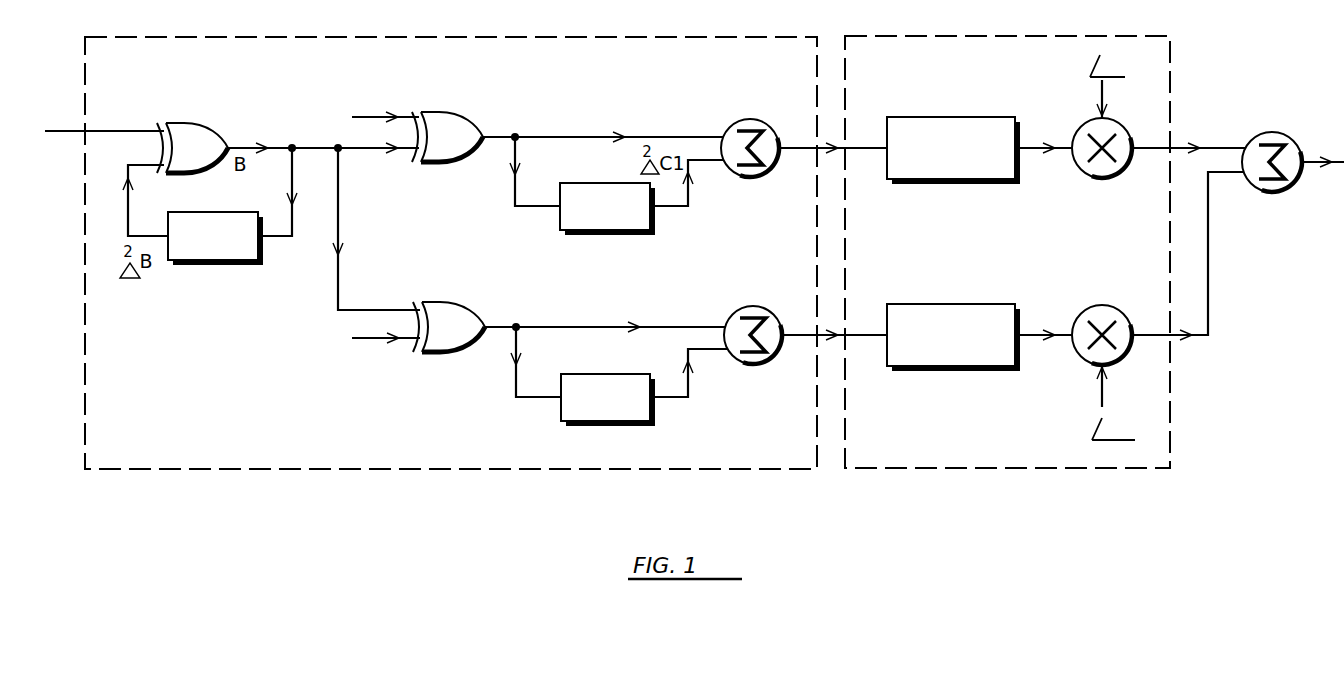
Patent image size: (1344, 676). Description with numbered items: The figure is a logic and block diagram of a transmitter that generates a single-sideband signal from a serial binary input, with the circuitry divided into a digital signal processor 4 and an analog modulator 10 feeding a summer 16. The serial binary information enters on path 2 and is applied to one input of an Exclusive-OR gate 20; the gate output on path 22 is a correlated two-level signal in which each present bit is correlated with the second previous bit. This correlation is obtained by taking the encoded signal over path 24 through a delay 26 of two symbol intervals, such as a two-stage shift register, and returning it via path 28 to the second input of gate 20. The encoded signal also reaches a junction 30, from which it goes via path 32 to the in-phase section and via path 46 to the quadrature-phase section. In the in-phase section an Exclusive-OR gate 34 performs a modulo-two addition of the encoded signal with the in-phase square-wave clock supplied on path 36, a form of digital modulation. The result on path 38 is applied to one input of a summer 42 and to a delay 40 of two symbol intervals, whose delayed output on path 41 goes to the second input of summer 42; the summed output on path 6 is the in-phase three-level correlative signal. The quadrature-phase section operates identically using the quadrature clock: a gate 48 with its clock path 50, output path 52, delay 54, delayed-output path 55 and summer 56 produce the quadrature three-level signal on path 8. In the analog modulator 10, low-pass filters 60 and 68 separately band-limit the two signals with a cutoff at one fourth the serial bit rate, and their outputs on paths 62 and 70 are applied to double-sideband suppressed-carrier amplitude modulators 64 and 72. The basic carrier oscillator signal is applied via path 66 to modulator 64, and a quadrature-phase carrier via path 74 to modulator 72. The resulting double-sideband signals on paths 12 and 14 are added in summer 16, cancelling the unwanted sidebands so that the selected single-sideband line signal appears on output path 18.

The path 2 is at (50, 131).
The digital signal processor 4 is at (121, 77).
The path 6 is at (822, 147).
The path 8 is at (838, 330).
The analog modulator 10 is at (885, 79).
The path 12 is at (1222, 147).
The path 14 is at (1208, 312).
The summer 16 is at (1268, 133).
The path 18 is at (1341, 150).
The Exclusive-OR gate 20 is at (183, 125).
The path 22 is at (283, 145).
The line to delay 24 is at (290, 196).
The delay 26 is at (200, 212).
The path 28 is at (128, 205).
The junction 30 is at (337, 153).
The path 32 is at (358, 150).
The Exclusive-OR gate 34 is at (445, 113).
The path 36 is at (373, 117).
The path 38 is at (505, 136).
The delay 40 is at (596, 183).
The path 41 is at (688, 198).
The summer 42 is at (758, 122).
The path 46 is at (338, 222).
The gate 48 is at (438, 302).
The clock input line T3 50 is at (363, 338).
The output line C2 52 is at (505, 326).
The delay element 54 is at (596, 374).
The delayed signal line 55 is at (700, 352).
The summing circuit 56 is at (752, 309).
The low-pass filter 60 is at (922, 117).
The filtered signal line 62 is at (1030, 147).
The double-sideband suppressed-carrier amplitude modulator 64 is at (1124, 130).
The path 66 is at (1102, 92).
The low-pass filter 68 is at (918, 304).
The filtered signal line 70 is at (1032, 334).
The double-sideband amplitude modulator 72 is at (1098, 305).
The path 74 is at (1102, 396).